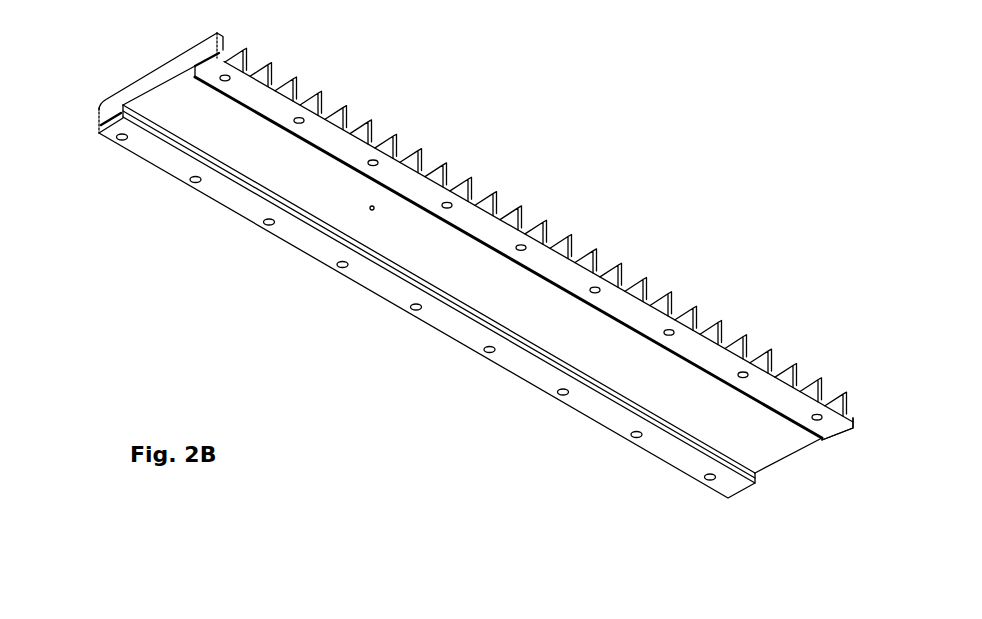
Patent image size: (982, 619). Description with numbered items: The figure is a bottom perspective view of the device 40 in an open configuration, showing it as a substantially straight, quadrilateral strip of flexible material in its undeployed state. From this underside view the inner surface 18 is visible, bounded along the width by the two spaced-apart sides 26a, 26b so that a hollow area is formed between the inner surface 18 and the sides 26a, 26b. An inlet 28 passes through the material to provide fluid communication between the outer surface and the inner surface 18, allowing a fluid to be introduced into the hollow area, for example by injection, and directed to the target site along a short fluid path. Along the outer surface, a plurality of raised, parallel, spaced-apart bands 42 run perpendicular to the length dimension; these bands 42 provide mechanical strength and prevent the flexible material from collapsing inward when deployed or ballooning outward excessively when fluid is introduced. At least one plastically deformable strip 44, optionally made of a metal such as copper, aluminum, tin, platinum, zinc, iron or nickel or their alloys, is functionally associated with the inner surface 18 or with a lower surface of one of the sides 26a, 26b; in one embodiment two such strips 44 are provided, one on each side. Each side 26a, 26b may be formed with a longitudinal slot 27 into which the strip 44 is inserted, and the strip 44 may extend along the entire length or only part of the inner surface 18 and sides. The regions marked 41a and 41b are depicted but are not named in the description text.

The inner surface 18 is at (677, 383).
The spaced-apart side 26a is at (207, 50).
The spaced-apart side 26b is at (107, 113).
The longitudinal slot 27 is at (242, 178).
The inlet 28 is at (368, 215).
The device 40 is at (682, 148).
The upper toothed plate 41a is at (243, 88).
The lower flange plate 41b is at (150, 148).
The raised bands 42 is at (346, 106).
The plastically deformable strip 44 is at (113, 120).